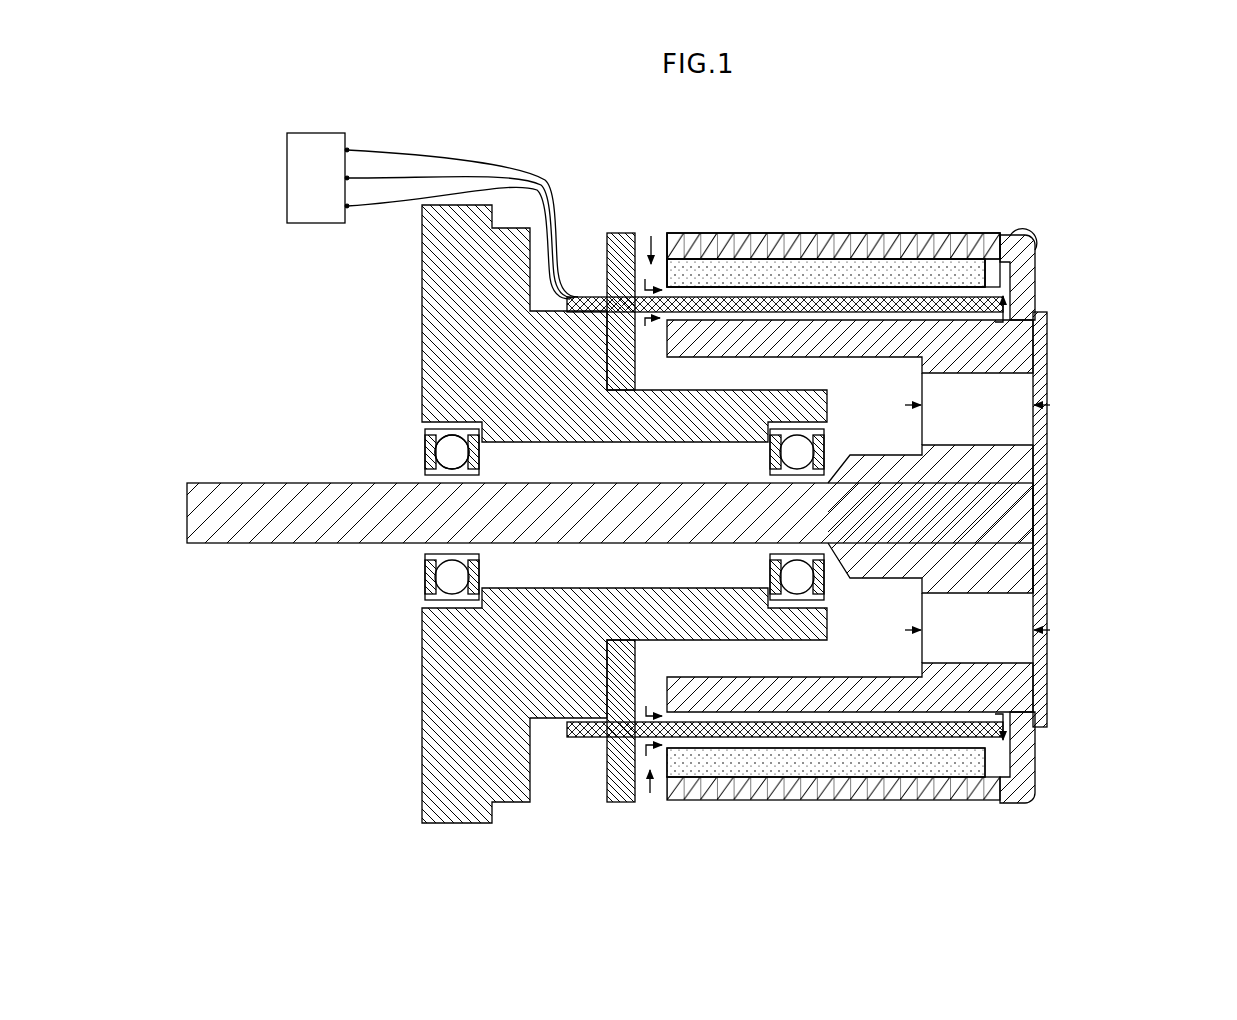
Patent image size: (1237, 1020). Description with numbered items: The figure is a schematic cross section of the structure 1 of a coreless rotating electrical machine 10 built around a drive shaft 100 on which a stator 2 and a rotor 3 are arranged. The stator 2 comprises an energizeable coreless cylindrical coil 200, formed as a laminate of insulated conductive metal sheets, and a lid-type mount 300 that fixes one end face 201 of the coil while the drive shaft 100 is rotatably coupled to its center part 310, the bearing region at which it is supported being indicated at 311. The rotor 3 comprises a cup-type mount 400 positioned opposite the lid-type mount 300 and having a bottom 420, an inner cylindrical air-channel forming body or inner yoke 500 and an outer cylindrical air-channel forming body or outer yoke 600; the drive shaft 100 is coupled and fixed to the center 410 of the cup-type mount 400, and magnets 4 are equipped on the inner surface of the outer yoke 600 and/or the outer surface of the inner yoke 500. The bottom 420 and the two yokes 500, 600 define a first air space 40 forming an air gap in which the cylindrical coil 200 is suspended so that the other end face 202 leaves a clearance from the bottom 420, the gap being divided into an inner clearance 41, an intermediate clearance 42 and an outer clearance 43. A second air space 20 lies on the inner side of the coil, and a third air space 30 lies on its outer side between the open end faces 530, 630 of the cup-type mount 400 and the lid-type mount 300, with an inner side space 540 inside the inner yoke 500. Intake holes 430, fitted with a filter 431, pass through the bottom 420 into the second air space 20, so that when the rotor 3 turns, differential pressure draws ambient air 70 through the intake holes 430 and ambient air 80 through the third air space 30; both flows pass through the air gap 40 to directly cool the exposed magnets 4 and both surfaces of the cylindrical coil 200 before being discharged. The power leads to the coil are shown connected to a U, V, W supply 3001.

The structure of a coreless rotating electrical machine including armature 1 is at (1090, 188).
The stator 2 is at (303, 368).
The rotor 3 is at (1148, 375).
The magnets 4 is at (882, 275).
The coreless rotating electrical machine 10 is at (283, 645).
The second air space 20 is at (640, 246).
The third air space 30 is at (650, 228).
The first air space 40 is at (1027, 298).
The inner clearance 41 is at (710, 280).
The intermediate clearance 42 is at (1037, 277).
The outer clearance 43 is at (745, 340).
The ambient air taken into second air space 70 is at (1061, 519).
The ambient air taken into third air space 80 is at (650, 762).
The drive shaft 100 is at (318, 545).
The cylindrical coil 200 is at (745, 285).
The fixed end face of cylindrical coil 201 is at (570, 272).
The open end face of cylindrical coil 202 is at (1040, 262).
The lid-type mount 300 is at (405, 352).
The center part of lid-type mount 310 is at (413, 425).
The ball 311 is at (430, 450).
The cup-type mount 400 is at (1060, 498).
The center of cup-type mount 410 is at (1040, 512).
The bottom of cup-type mount 420 is at (1050, 455).
The intake holes 430 is at (977, 518).
The filter for intake holes 431 is at (1040, 344).
The inner cylindrical air-channel forming body 500 is at (880, 283).
The open end face of inner cylindrical air-channel forming body 530 is at (705, 795).
The inner side space of inner cylindrical air-channel forming body 540 is at (1040, 576).
The outer cylindrical air-channel forming body 600 is at (807, 293).
The open end face of outer cylindrical air-channel forming body 630 is at (700, 795).
The power supply connector 3001 is at (472, 165).